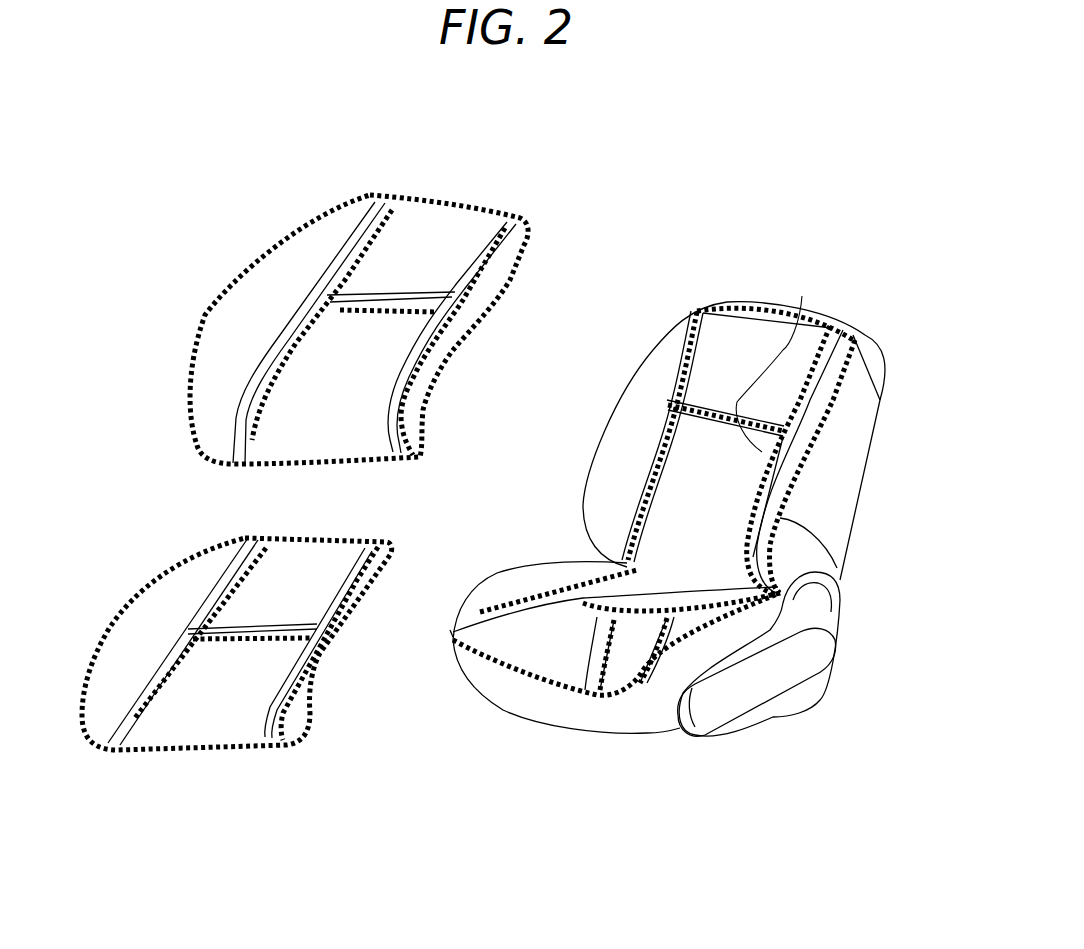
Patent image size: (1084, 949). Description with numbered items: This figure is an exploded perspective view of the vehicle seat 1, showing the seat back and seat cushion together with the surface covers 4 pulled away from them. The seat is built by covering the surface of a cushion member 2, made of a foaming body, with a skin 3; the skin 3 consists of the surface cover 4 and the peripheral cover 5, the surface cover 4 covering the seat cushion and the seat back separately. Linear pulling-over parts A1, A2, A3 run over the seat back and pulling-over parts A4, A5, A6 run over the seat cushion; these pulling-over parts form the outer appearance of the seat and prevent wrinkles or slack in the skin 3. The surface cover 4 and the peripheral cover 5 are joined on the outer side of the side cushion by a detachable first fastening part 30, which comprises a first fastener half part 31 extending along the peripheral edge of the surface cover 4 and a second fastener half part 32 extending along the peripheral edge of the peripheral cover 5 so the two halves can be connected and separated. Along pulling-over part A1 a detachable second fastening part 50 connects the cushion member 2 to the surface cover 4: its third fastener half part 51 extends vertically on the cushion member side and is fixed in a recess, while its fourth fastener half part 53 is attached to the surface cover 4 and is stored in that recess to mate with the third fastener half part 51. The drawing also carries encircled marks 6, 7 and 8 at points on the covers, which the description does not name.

The surface cover 4 is at (414, 476).
The first fastener half part 31 is at (430, 200).
The fourth fastener half part 53 is at (395, 300).
The peripheral cover 5 is at (590, 532).
The second fastener half part 32 is at (808, 317).
The second fastening part 50 is at (731, 410).
The third fastener half part 51 is at (775, 361).
The first fastening part 30 is at (843, 560).
The pulling-over part A1 is at (672, 338).
The pulling-over part A2 is at (827, 347).
The pulling-over part A3 is at (800, 458).
The pulling-over part A4 is at (543, 600).
The pulling-over part A5 is at (663, 665).
The pulling-over part A6 is at (597, 640).
The vehicle seat 1 is at (417, 297).
The cushion member 2 is at (433, 350).
The skin 3 is at (268, 397).
The step 6 attachment position 6 is at (595, 614).
The step 7 attachment position 7 is at (250, 578).
The step 8 attachment position 8 is at (573, 694).